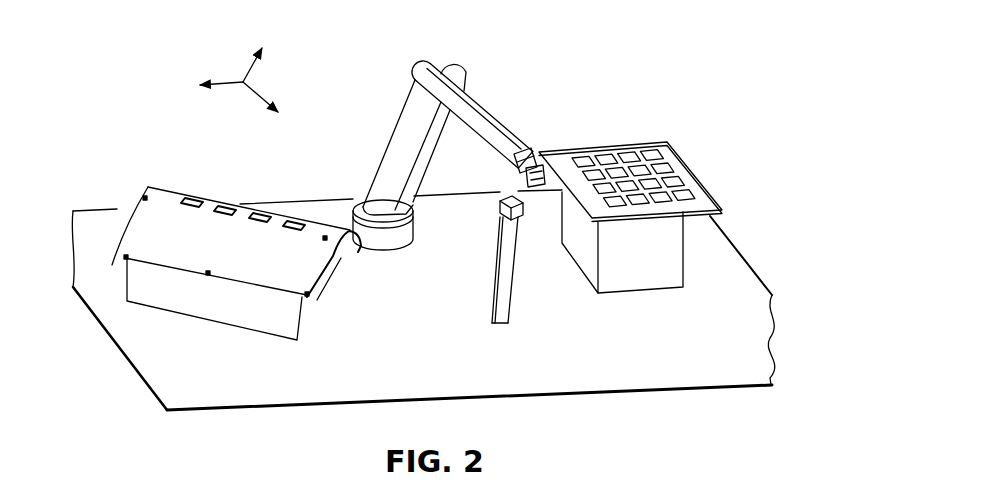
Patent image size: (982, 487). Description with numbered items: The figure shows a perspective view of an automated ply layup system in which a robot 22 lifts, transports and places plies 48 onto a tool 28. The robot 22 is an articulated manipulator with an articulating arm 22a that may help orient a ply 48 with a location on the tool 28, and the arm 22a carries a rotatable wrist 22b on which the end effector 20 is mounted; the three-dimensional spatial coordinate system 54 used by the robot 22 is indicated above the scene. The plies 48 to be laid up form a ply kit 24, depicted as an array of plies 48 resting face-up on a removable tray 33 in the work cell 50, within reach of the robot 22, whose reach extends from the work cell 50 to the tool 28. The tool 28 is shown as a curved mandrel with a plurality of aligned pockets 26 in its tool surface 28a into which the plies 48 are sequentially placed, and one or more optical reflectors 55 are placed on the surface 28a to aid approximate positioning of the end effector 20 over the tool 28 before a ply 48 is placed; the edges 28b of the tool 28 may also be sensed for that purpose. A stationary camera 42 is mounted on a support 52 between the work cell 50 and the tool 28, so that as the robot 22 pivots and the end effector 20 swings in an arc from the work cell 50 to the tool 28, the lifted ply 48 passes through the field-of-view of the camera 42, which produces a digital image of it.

The 3-D spatial coordinate system 54 is at (215, 61).
The robot 22 is at (400, 102).
The articulating arm 22a is at (472, 124).
The rotatable wrist 22b is at (535, 155).
The end effector 20 is at (543, 189).
The ply kit 24 is at (646, 179).
The plies 48 is at (628, 157).
The removable tray 33 is at (693, 192).
The work cell 50 is at (714, 129).
The tool 28 is at (228, 253).
The tool surface 28a is at (250, 252).
The edges of the tool 28b is at (129, 199).
The pockets 26 is at (260, 212).
The optical reflectors 55 is at (147, 194).
The stationary camera 42 is at (501, 222).
The support 52 is at (506, 298).